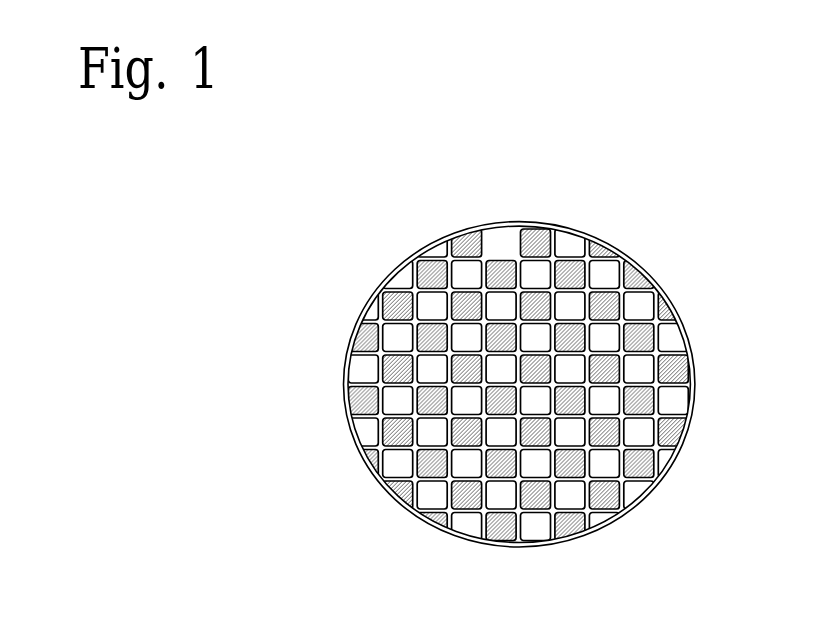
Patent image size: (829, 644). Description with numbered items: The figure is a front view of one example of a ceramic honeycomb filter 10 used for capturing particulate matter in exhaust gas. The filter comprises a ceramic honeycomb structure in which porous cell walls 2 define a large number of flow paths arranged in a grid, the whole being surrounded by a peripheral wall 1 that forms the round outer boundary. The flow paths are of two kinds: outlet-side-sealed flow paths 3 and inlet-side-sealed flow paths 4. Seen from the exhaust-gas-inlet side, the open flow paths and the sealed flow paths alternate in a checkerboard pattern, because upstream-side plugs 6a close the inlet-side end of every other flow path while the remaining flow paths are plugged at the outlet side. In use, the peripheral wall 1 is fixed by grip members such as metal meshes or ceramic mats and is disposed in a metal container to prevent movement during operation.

The ceramic honeycomb filter 10 is at (344, 208).
The peripheral wall 1 is at (427, 247).
The porous cell walls 2 is at (500, 252).
The outlet-side-sealed flow paths 3 is at (578, 306).
The inlet-side-sealed flow paths 4 is at (592, 275).
The upstream-side plugs 6a is at (575, 275).